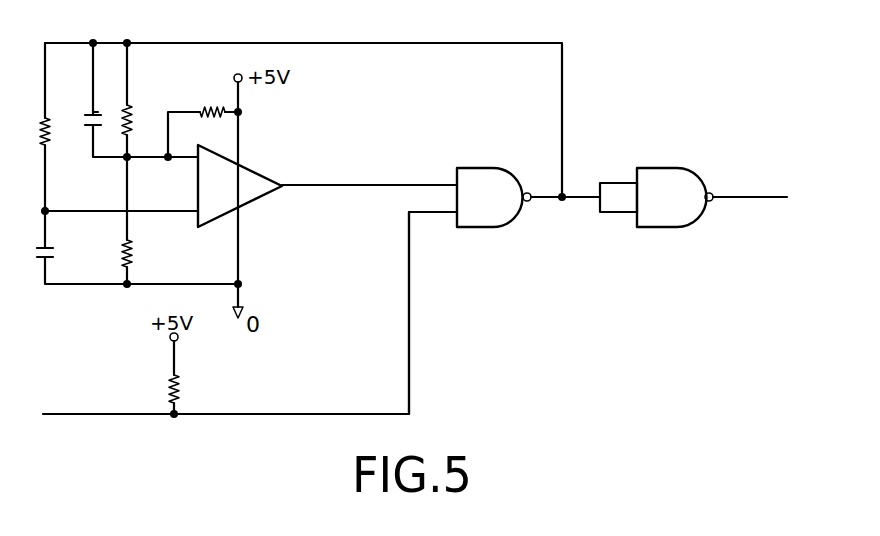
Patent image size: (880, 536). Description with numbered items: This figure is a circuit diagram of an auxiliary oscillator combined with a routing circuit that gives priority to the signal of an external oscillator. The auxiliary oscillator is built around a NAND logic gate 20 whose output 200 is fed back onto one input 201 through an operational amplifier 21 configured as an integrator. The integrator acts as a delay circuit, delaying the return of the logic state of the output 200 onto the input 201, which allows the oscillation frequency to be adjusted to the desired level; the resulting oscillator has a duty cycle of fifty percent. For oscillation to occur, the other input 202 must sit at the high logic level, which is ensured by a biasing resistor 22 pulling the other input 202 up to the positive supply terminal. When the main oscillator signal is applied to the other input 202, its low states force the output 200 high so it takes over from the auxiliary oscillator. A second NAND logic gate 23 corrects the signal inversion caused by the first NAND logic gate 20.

The NAND logic gate 20 is at (493, 167).
The operational amplifier 21 is at (255, 169).
The biasing resistor 22 is at (180, 386).
The second NAND logic gate 23 is at (676, 167).
The output 200 is at (531, 202).
The input 201 is at (403, 183).
The other input 202 is at (410, 320).